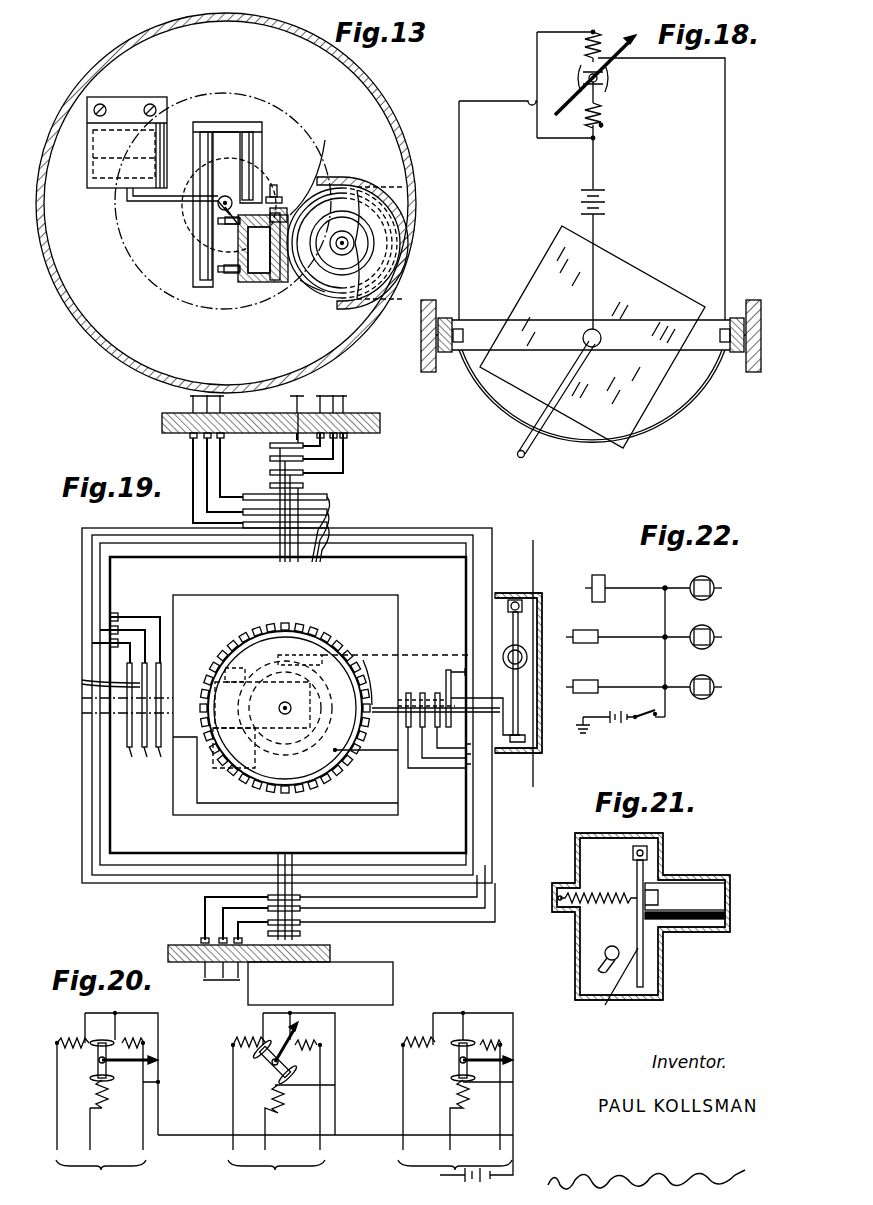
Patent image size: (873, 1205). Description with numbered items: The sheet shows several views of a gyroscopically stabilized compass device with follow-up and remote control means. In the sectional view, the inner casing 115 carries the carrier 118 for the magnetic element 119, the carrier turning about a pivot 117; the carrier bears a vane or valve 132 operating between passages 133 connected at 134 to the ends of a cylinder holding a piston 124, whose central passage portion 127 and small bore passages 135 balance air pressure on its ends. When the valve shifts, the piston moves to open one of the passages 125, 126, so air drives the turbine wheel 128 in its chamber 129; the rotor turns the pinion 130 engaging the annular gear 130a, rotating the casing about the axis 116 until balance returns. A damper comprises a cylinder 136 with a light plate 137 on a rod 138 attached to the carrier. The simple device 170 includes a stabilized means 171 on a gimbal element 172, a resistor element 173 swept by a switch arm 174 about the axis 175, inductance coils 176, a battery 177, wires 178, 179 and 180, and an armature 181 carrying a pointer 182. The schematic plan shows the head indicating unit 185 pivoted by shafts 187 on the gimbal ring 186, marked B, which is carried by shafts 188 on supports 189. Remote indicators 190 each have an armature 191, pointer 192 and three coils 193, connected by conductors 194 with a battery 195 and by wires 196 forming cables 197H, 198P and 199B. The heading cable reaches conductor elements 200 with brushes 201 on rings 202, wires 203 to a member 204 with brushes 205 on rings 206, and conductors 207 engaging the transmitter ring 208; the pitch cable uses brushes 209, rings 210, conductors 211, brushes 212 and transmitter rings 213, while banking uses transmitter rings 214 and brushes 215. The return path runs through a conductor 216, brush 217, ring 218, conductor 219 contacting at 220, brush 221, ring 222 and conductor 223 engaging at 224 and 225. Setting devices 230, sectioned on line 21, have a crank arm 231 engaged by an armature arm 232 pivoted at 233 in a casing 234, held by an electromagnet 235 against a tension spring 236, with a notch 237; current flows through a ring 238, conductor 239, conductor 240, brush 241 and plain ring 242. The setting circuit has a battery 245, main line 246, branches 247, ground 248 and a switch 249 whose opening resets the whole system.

In FIG. 13, the inner casing 115 is at (368, 98).
In FIG. 19, the axis 116 is at (283, 706).
In FIG. 13, the pivot 117 is at (225, 195).
In FIG. 13, the carrier 118 is at (262, 125).
In FIG. 13, the magnetic element 119 is at (246, 132).
In FIG. 13, the piston 124 is at (262, 283).
In FIG. 13, the passage 125 is at (322, 167).
In FIG. 13, the passage 126 is at (280, 275).
In FIG. 13, the central passage portion 127 is at (225, 235).
In FIG. 13, the rotor or turbine wheel 128 is at (320, 300).
In FIG. 13, the chamber 129 is at (352, 188).
In FIG. 13, the pinion 130 is at (380, 255).
In FIG. 13, the annular gear 130a is at (142, 270).
In FIG. 13, the vane or valve 132 is at (274, 185).
In FIG. 13, the passages 133 is at (280, 198).
In FIG. 13, the connection 134 is at (218, 221).
In FIG. 13, the small bore passages 135 is at (225, 222).
In FIG. 13, the cylinder 136 is at (100, 180).
In FIG. 13, the piston or plate 137 is at (100, 150).
In FIG. 13, the rod 138 is at (135, 210).
In FIG. 18, the device 170 is at (725, 235).
In FIG. 18, the gyroscopically stabilized means 171 is at (660, 285).
In FIG. 18, the gimbal element 172 is at (484, 320).
In FIG. 18, the resistor element 173 is at (695, 403).
In FIG. 18, the switch arm 174 is at (533, 440).
In FIG. 18, the axis 175 is at (598, 333).
In FIG. 18, the inductance coils 176 is at (598, 48).
In FIG. 18, the battery 177 is at (604, 201).
In FIG. 18, the wire 178 is at (459, 198).
In FIG. 18, the wire 179 is at (722, 172).
In FIG. 18, the wires 180 is at (537, 76).
In FIG. 18, the rotatable armature or magnet 181 is at (608, 85).
In FIG. 18, the indicator or pointer 182 is at (622, 62).
In FIG. 19, the head indicating unit 185 is at (378, 598).
In FIG. 19, the gimbal ring 186 is at (82, 810).
In FIG. 19, the shafts 187 is at (120, 713).
In FIG. 21, the shafts 187 is at (618, 935).
In FIG. 19, the shafts 188 is at (348, 950).
In FIG. 19, the supports 189 is at (365, 418).
In FIG. 22, the remote controlled indicators 190 is at (708, 578).
In FIG. 20, the remote controlled indicators 190 is at (65, 1060).
In FIG. 20, the armature 191 is at (92, 1068).
In FIG. 20, the pointer 192 is at (130, 1063).
In FIG. 20, the coils 193 is at (72, 1040).
In FIG. 20, the conductors 194 is at (158, 1108).
In FIG. 20, the battery 195 is at (512, 1170).
In FIG. 20, the wire or conductor 196 is at (57, 1135).
In FIG. 19, the conductor unit 197H is at (227, 992).
In FIG. 20, the conductor unit 197H is at (107, 1090).
In FIG. 19, the conductor unit 198P is at (344, 396).
In FIG. 20, the conductor unit 198P is at (290, 1095).
In FIG. 19, the conductor unit 199B is at (188, 396).
In FIG. 20, the conductor unit 199B is at (455, 1089).
In FIG. 19, the conductor elements 200 is at (215, 927).
In FIG. 19, the brushes 201 is at (242, 890).
In FIG. 19, the conductor rings 202 is at (300, 897).
In FIG. 19, the wires 203 is at (472, 845).
In FIG. 19, the member 204 is at (450, 760).
In FIG. 19, the brushes 205 is at (422, 727).
In FIG. 19, the conductor rings 206 is at (409, 693).
In FIG. 19, the conductors 207 is at (363, 660).
In FIG. 19, the ring transmitter member 208 is at (348, 775).
In FIG. 19, the brushes 209 is at (345, 450).
In FIG. 19, the rings 210 is at (270, 473).
In FIG. 19, the conductors 211 is at (108, 596).
In FIG. 19, the brushes 212 is at (140, 645).
In FIG. 19, the transmitter rings 213 is at (90, 682).
In FIG. 19, the transmitter rings 214 is at (330, 522).
In FIG. 19, the brushes or conductors 215 is at (200, 515).
In FIG. 19, the conductor 216 is at (312, 410).
In FIG. 19, the brush 217 is at (286, 413).
In FIG. 19, the conductor ring 218 is at (270, 446).
In FIG. 19, the conductor 219 is at (330, 497).
In FIG. 19, the contact 220 is at (316, 562).
In FIG. 19, the brush or conductor 221 is at (448, 670).
In FIG. 19, the ring 222 is at (510, 712).
In FIG. 19, the conductor 223 is at (370, 755).
In FIG. 19, the contact 224 is at (330, 728).
In FIG. 19, the contact 225 is at (144, 719).
In FIG. 19, the setting device 230 is at (380, 960).
In FIG. 22, the setting device 230 is at (598, 575).
In FIG. 21, the setting device 230 is at (567, 866).
In FIG. 19, the crank arm 231 is at (512, 745).
In FIG. 21, the crank arm 231 is at (605, 957).
In FIG. 19, the arm 232 is at (530, 720).
In FIG. 21, the arm 232 is at (645, 972).
In FIG. 19, the pivot 233 is at (518, 658).
In FIG. 21, the pivot 233 is at (648, 852).
In FIG. 19, the casing 234 is at (540, 690).
In FIG. 21, the casing 234 is at (575, 950).
In FIG. 19, the electromagnet 235 is at (528, 657).
In FIG. 21, the electromagnet 235 is at (715, 896).
In FIG. 21, the tension spring 236 is at (607, 893).
In FIG. 21, the guide or notch 237 is at (617, 988).
In FIG. 19, the ring 238 is at (300, 933).
In FIG. 19, the conductor 239 is at (410, 880).
In FIG. 19, the conductor 240 is at (415, 655).
In FIG. 19, the brush 241 is at (295, 658).
In FIG. 19, the plain contact ring 242 is at (255, 670).
In FIG. 22, the battery or source of current 245 is at (620, 723).
In FIG. 22, the main line 246 is at (665, 645).
In FIG. 22, the branches 247 is at (668, 580).
In FIG. 22, the ground 248 is at (590, 730).
In FIG. 22, the switch 249 is at (650, 722).
In FIG. 19, the section line 21 is at (539, 576).
In FIG. 20, the banking designation B is at (471, 1010).